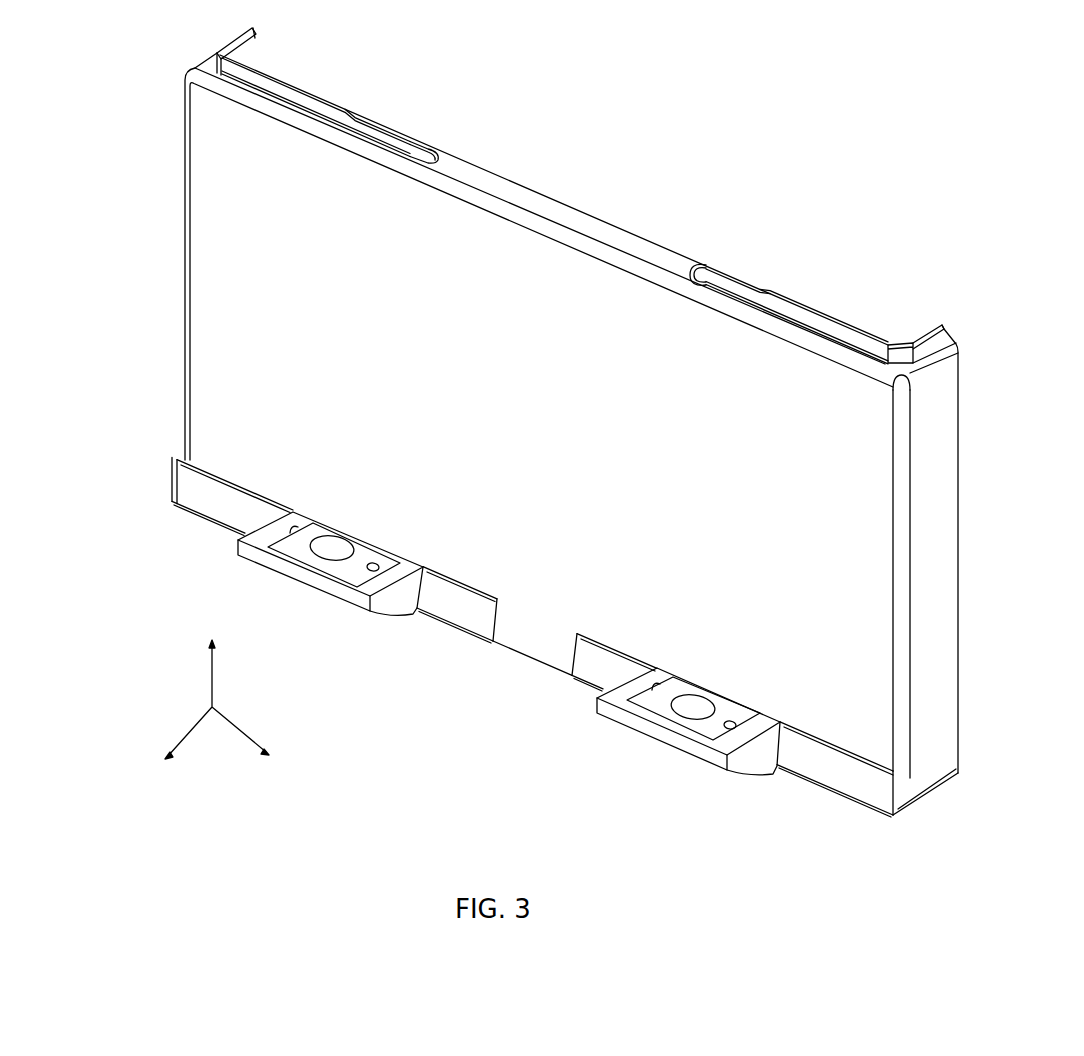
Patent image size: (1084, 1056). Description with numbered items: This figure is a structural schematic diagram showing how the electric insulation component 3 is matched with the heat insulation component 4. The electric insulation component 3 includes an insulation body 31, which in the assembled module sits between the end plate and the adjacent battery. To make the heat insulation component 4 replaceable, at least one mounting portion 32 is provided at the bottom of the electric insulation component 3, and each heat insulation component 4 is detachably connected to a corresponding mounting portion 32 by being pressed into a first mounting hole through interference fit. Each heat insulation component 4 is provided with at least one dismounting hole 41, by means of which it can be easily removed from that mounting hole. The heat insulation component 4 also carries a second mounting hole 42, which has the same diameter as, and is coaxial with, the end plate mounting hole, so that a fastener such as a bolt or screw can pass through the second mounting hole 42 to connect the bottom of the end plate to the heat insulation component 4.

The electric insulation component 3 is at (106, 334).
The insulation body 31 is at (202, 221).
The mounting portion 32 is at (598, 708).
The heat insulation component 4 is at (700, 727).
The dismounting hole 41 is at (371, 570).
The second mounting hole 42 is at (331, 556).